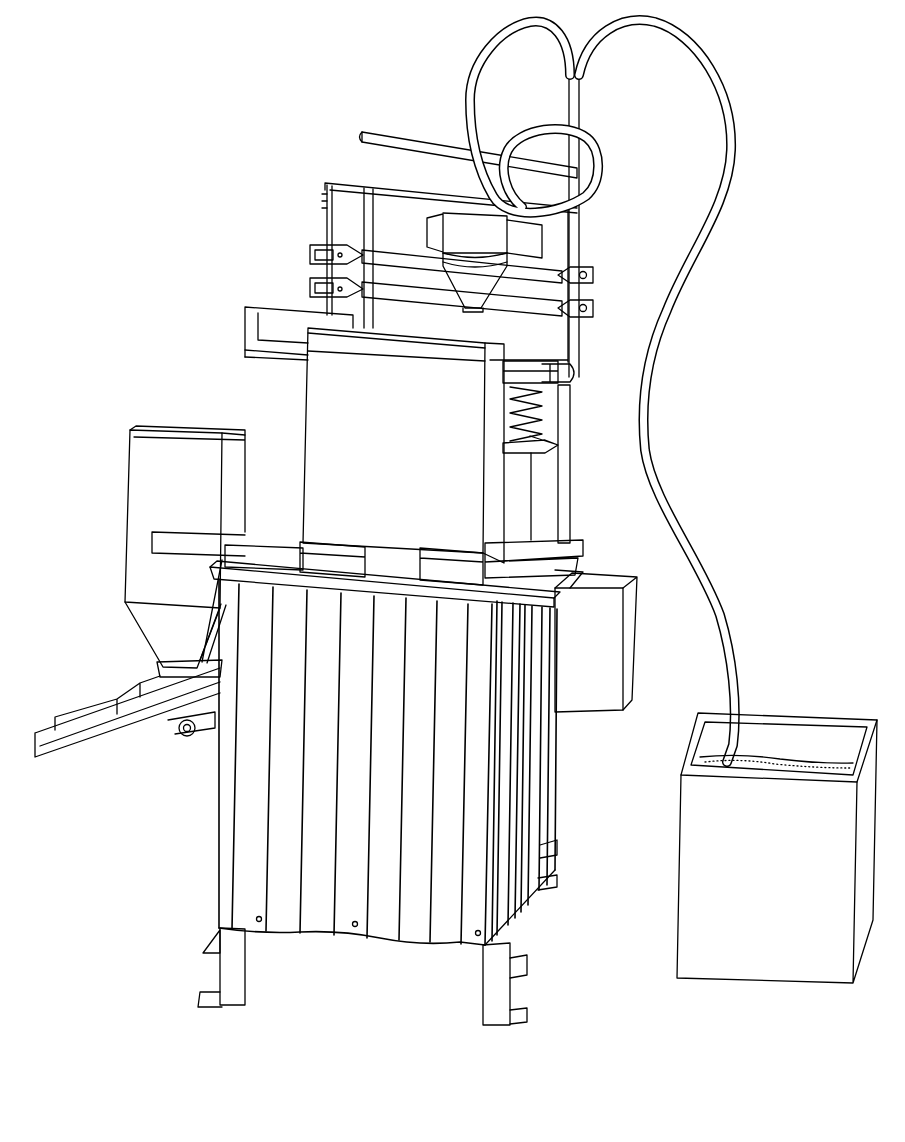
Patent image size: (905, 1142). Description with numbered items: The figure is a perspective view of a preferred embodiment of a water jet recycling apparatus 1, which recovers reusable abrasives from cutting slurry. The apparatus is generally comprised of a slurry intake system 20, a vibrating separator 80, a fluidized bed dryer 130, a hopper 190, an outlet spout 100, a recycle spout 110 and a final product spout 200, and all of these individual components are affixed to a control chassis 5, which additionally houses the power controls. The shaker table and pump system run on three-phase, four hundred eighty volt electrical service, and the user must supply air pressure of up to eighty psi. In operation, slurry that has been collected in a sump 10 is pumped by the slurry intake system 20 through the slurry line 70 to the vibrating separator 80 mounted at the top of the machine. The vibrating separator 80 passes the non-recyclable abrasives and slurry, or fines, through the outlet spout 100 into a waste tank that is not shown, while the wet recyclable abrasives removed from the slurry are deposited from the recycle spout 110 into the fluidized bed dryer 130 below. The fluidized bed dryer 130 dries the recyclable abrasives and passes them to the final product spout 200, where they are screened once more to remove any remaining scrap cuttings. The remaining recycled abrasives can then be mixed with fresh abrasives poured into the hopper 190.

The water jet recycling apparatus 1 is at (118, 361).
The control chassis 5 is at (377, 746).
The sump 10 is at (781, 898).
The slurry intake system 20 is at (762, 690).
The slurry line 70 is at (660, 341).
The vibrating separator 80 is at (600, 249).
The outlet spout 100 is at (283, 312).
The recycle spout 110 is at (475, 230).
The fluidized bed dryer 130 is at (418, 450).
The hopper 190 is at (193, 497).
The final product spout 200 is at (119, 665).